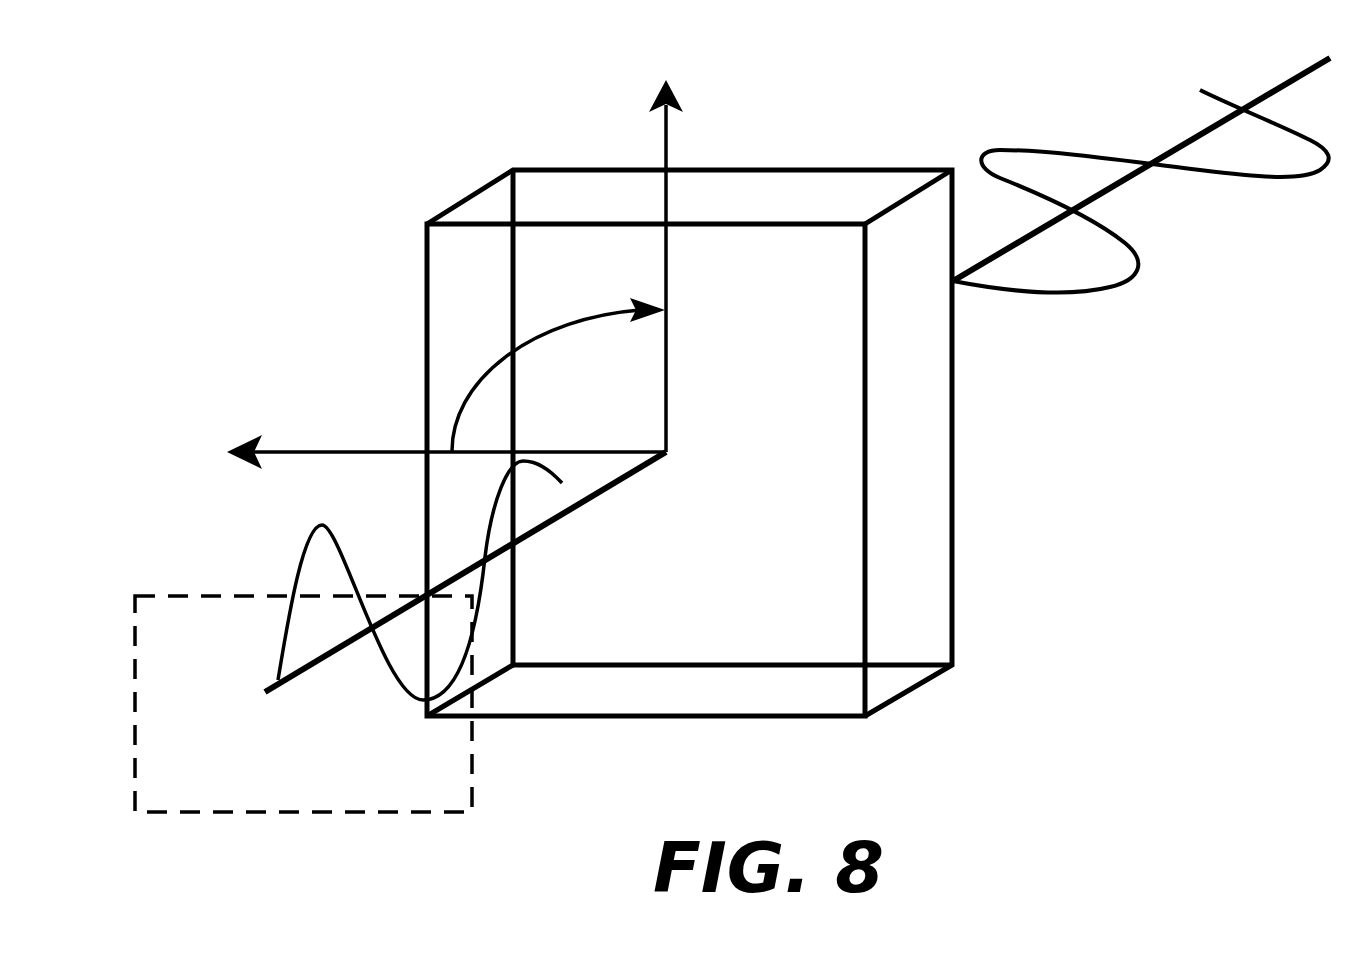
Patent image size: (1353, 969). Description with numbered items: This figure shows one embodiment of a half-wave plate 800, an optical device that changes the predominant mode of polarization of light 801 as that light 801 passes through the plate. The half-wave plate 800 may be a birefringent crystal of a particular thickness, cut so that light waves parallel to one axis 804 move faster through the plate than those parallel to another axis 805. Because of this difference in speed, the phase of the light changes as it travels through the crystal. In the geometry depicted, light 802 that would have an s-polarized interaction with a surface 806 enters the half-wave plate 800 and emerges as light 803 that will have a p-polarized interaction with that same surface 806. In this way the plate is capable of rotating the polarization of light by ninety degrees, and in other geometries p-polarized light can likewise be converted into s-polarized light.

The half-wave plate 800 is at (258, 290).
The light 801 is at (313, 660).
The s-polarized light 802 is at (283, 612).
The p-polarized light 803 is at (1140, 257).
The axis 804 is at (380, 450).
The another axis 805 is at (667, 140).
The surface 806 is at (472, 738).